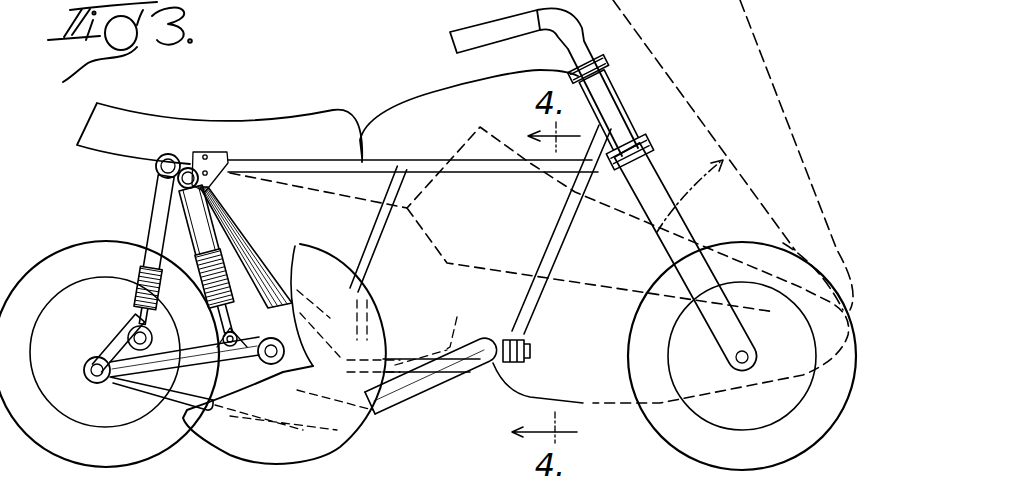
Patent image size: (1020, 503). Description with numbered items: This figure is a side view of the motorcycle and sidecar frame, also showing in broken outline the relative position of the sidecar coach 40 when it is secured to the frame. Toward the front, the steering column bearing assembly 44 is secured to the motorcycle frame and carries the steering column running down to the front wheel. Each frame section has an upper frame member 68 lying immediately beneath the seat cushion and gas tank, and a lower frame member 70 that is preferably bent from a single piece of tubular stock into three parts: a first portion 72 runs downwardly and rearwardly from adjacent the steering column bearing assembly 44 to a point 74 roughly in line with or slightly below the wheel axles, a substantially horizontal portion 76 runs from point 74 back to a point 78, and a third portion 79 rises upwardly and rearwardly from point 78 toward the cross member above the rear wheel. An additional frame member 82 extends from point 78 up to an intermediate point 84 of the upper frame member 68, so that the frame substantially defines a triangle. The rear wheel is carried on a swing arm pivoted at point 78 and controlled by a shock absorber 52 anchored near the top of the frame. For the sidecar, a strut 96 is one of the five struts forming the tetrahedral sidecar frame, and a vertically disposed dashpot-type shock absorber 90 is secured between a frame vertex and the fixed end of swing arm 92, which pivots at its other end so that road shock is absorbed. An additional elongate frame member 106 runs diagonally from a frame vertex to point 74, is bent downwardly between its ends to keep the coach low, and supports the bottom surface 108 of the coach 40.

The sidecar body or coach 40 is at (602, 412).
The steering column bearing assembly 44 is at (607, 98).
The shock absorber 52 is at (150, 190).
The upper frame members 68 is at (293, 160).
The lower frame member 70 is at (563, 245).
The first portion 72 is at (540, 280).
The point 74 is at (503, 357).
The substantially horizontal portion 76 is at (471, 372).
The point 78 is at (383, 322).
The third portion 79 is at (240, 270).
The additional frame member 82 is at (373, 262).
The intermediate point 84 is at (400, 165).
The shock absorber 90 is at (147, 250).
The swing arm 92 is at (160, 366).
The strut 96 is at (163, 232).
The additional elongate frame member 106 is at (382, 405).
The bottom surface 108 is at (453, 312).